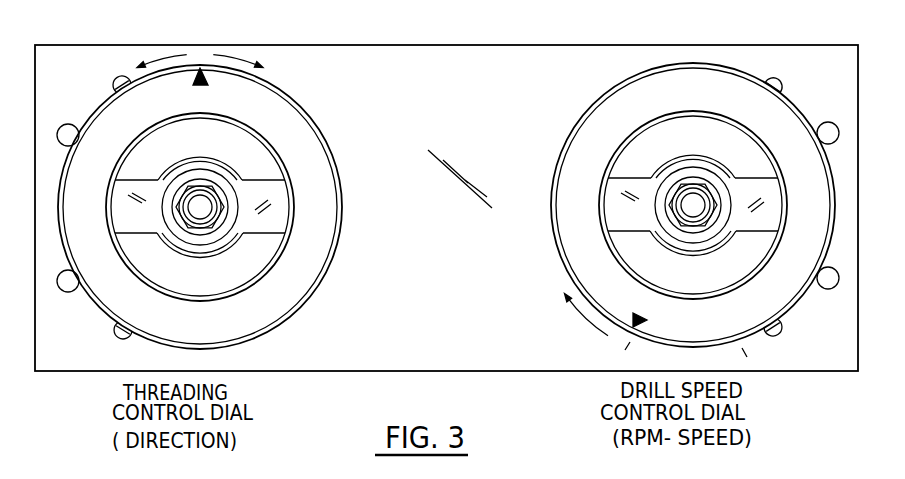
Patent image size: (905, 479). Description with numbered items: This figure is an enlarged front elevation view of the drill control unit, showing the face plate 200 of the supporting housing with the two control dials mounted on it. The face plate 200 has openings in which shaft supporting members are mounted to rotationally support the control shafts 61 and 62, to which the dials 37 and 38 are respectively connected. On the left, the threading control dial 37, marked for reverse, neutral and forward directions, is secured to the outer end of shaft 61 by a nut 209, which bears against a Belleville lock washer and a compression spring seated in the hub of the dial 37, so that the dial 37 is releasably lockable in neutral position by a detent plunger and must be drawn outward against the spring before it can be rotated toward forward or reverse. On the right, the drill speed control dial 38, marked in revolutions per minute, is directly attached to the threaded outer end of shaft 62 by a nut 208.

The dial 37 is at (200, 196).
The dial 38 is at (680, 214).
The nut 209 is at (200, 180).
The control shaft 61 is at (207, 210).
The nut 208 is at (693, 188).
The control shaft 62 is at (693, 210).
The face plate 200 is at (467, 185).